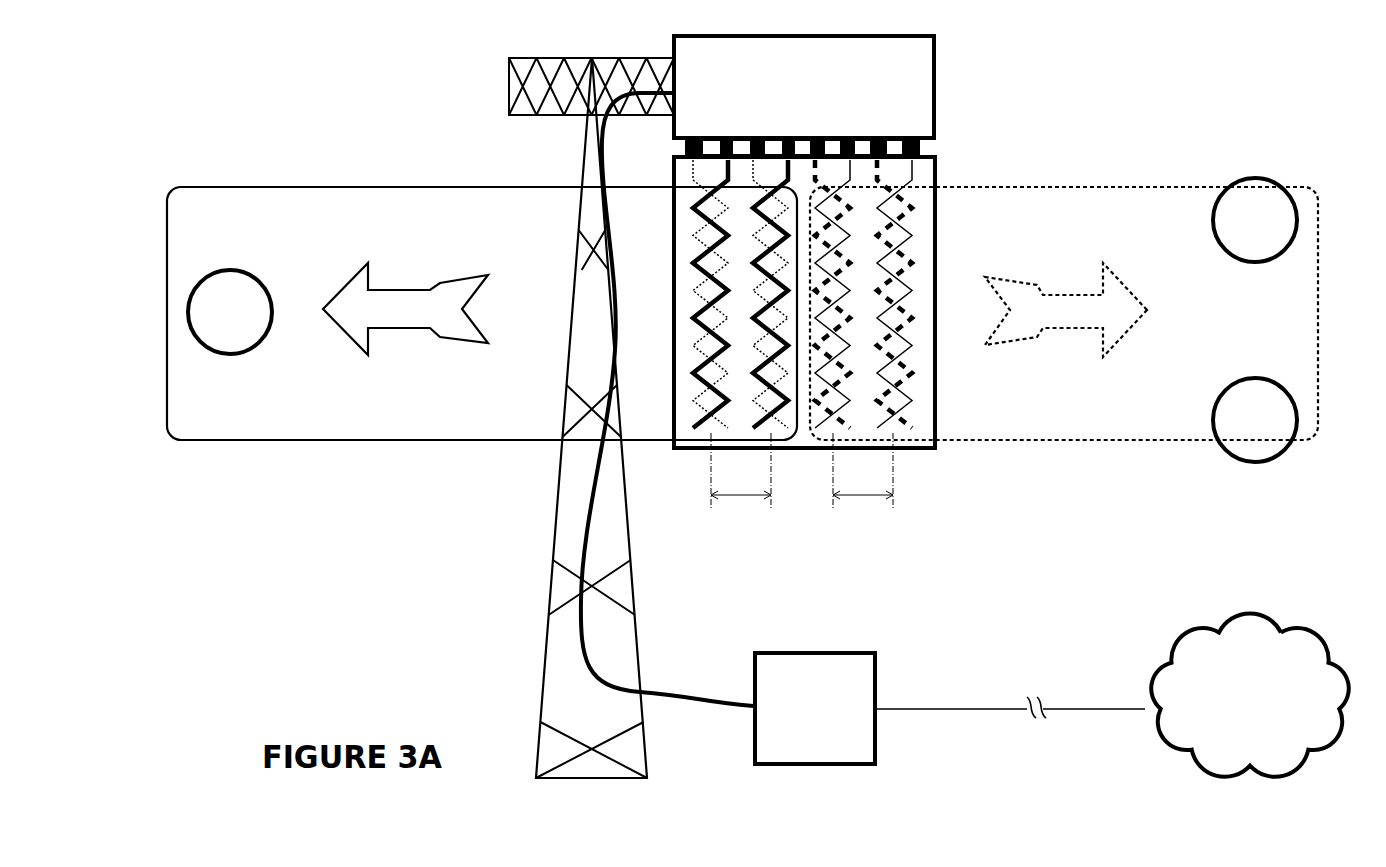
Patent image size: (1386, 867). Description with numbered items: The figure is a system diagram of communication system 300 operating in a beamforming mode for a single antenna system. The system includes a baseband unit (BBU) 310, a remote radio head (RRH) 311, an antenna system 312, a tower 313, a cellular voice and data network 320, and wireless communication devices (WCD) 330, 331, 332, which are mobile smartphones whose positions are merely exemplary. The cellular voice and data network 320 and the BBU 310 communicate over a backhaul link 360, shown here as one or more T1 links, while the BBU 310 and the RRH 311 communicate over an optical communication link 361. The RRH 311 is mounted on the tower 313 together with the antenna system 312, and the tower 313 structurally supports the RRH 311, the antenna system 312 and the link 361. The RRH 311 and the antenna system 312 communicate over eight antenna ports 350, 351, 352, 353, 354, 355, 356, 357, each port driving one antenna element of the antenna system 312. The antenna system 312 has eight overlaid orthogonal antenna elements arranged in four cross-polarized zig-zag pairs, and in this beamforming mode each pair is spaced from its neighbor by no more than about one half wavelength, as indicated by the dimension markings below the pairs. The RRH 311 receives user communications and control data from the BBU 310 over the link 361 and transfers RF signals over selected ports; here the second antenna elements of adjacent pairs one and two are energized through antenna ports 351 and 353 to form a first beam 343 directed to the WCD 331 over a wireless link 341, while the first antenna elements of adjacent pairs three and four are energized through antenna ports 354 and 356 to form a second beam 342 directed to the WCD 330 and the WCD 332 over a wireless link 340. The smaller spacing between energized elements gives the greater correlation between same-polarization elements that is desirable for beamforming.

The communication system 300 is at (1149, 79).
The baseband unit (BBU) 310 is at (815, 708).
The remote radio head (RRH) 311 is at (804, 87).
The antenna system 312 is at (935, 448).
The tower 313 is at (508, 82).
The cellular voice and data network 320 is at (1250, 694).
The wireless communication device (WCD) 330 is at (1255, 220).
The wireless communication device (WCD) 331 is at (230, 312).
The wireless communication device (WCD) 332 is at (1255, 420).
The wireless link 340 is at (1066, 310).
The wireless link 341 is at (405, 309).
The second beam 342 is at (1125, 440).
The first beam 343 is at (356, 440).
The antenna port 350 is at (694, 138).
The antenna port 351 is at (727, 138).
The antenna port 352 is at (756, 138).
The antenna port 353 is at (786, 138).
The antenna port 354 is at (817, 138).
The antenna port 355 is at (848, 138).
The antenna port 356 is at (879, 138).
The antenna port 357 is at (910, 138).
The backhaul link 360 is at (924, 706).
The optical communication link 361 is at (710, 704).